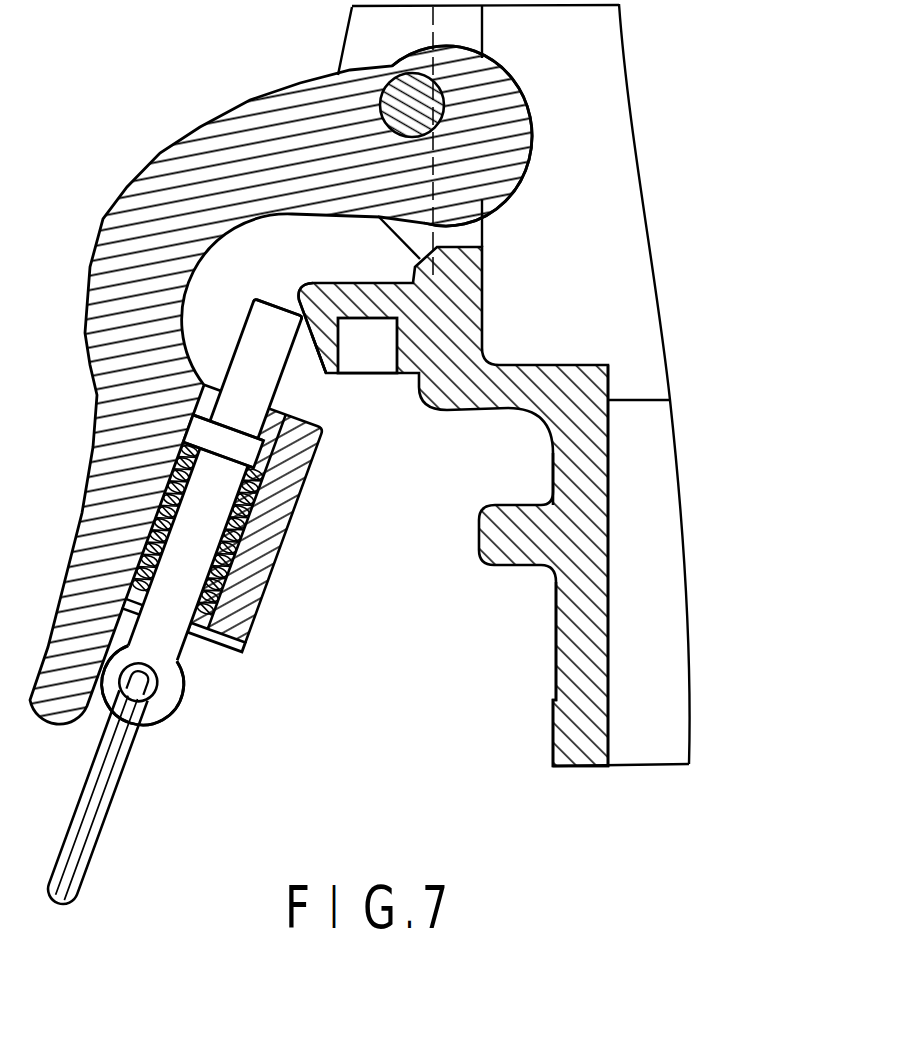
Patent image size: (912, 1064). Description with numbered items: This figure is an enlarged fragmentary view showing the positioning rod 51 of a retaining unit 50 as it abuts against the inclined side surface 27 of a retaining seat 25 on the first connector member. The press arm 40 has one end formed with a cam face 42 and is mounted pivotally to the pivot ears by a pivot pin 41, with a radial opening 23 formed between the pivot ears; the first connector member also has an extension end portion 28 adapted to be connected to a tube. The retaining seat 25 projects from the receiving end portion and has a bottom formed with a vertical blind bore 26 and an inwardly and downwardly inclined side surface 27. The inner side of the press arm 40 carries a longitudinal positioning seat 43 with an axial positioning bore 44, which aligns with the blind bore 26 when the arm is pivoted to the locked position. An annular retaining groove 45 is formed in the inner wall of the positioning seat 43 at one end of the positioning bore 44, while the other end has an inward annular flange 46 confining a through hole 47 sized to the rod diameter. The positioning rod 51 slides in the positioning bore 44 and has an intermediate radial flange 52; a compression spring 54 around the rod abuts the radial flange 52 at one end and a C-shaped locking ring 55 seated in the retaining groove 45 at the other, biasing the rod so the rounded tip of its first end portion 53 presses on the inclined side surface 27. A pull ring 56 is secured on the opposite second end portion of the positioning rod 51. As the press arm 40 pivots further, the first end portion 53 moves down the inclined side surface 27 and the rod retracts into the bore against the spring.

The press arm 40 is at (124, 190).
The pivot pin 41 is at (444, 92).
The cam face 42 is at (502, 127).
The radial opening 23 is at (468, 232).
The extension end portion 28 is at (565, 655).
The inclined side surface 27 is at (297, 293).
The retaining seat 25 is at (328, 340).
The blind bore 26 is at (368, 353).
The inward annular flange 46 is at (209, 398).
The first end portion 53 is at (257, 347).
The through hole 47 is at (305, 452).
The positioning seat 43 is at (268, 452).
The positioning bore 44 is at (256, 443).
The radial flange 52 is at (249, 474).
The compression spring 54 is at (198, 547).
The positioning rod 51 is at (243, 613).
The C-shaped locking ring 55 is at (237, 653).
The annular retaining groove 45 is at (201, 648).
The retaining unit 50 is at (167, 722).
The pull ring 56 is at (113, 782).